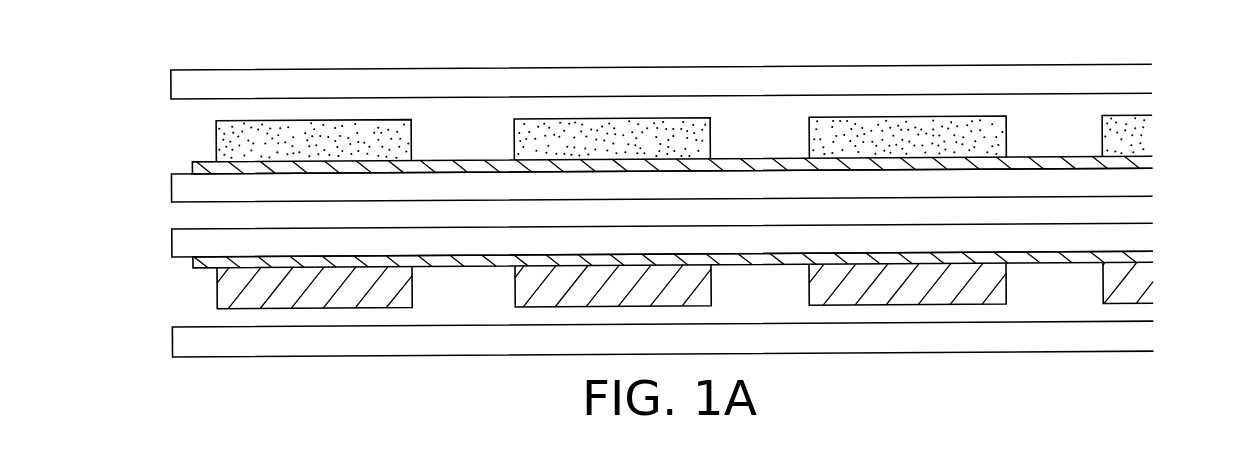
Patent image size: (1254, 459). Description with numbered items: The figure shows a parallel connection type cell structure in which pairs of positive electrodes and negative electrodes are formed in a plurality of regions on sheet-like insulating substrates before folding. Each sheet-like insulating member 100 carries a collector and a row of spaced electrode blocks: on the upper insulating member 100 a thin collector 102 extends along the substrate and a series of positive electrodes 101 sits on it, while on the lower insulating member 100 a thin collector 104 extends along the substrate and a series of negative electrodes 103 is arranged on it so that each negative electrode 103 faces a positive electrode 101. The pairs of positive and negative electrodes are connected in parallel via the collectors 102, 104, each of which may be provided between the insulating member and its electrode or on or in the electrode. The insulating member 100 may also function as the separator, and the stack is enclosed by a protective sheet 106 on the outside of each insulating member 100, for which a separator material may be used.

The sheet-like insulating member 100 is at (1142, 188).
The positive electrode 101 is at (522, 150).
The collector 102 is at (740, 166).
The negative electrode 103 is at (710, 295).
The collector 104 is at (1025, 263).
The protective sheet 106 is at (936, 78).